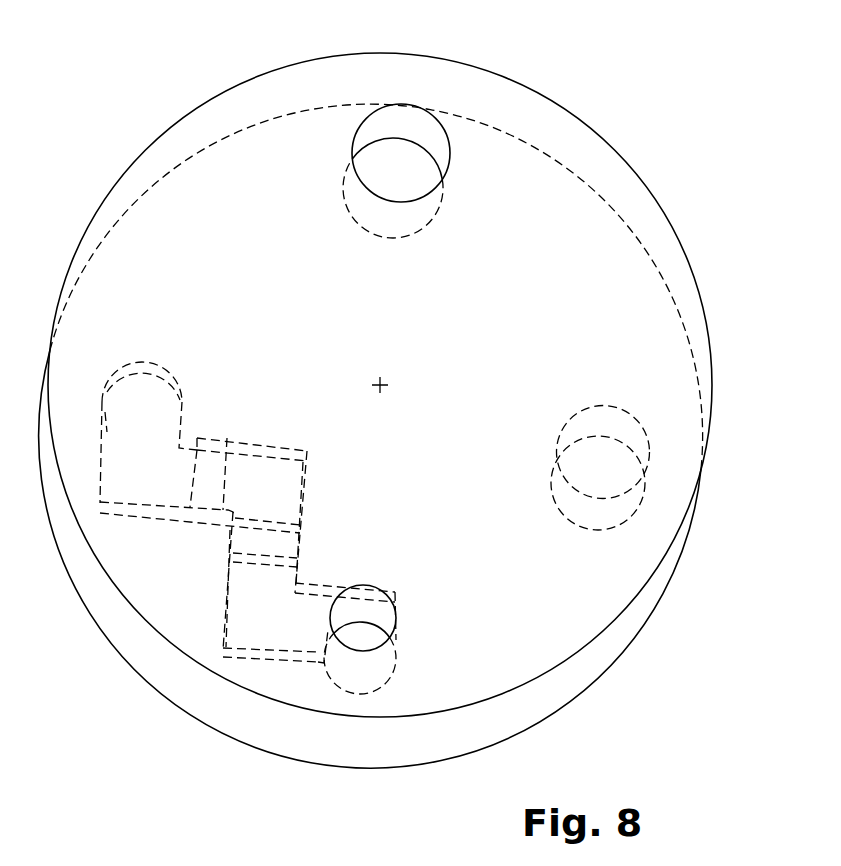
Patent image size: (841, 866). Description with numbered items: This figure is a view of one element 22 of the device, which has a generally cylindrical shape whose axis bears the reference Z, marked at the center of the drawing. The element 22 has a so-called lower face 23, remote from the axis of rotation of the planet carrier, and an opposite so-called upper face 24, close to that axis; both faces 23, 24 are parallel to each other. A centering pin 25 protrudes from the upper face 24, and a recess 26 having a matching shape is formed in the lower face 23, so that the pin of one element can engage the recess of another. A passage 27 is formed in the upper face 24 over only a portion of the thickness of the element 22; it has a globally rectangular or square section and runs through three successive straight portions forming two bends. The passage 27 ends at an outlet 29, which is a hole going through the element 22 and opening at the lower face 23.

The element 22 is at (70, 154).
The lower face 23 is at (624, 288).
The upper face 24 is at (592, 691).
The centering pin 25 is at (608, 515).
The recess 26 is at (416, 130).
The passage 27 is at (208, 602).
The outlet 29 is at (376, 617).
The axis of the element Z is at (386, 384).